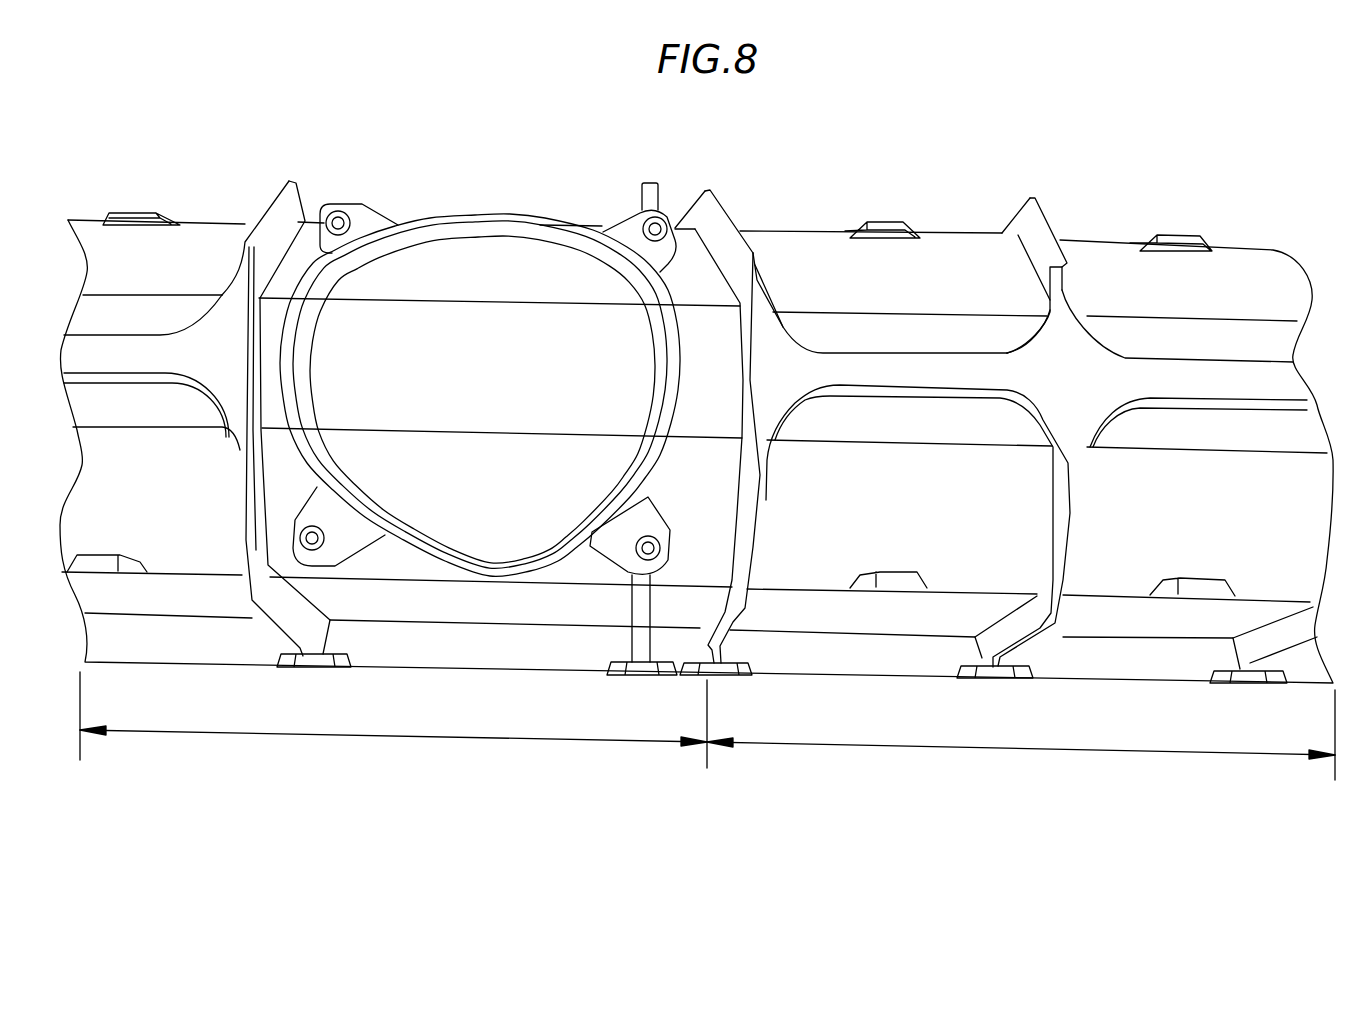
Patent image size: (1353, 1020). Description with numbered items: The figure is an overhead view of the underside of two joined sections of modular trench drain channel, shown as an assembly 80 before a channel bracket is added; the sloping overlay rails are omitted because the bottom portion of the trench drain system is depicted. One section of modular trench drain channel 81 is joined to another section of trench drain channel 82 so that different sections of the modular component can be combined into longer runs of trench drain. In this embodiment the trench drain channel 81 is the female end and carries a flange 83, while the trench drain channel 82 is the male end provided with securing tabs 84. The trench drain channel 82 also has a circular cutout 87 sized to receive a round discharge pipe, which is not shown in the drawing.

The beam assembly 80 is at (758, 150).
The trench drain channel 81 is at (1007, 748).
The trench drain channel 82 is at (400, 740).
The flange 83 is at (714, 193).
The securing tabs 84 is at (648, 182).
The circular cutout 87 is at (468, 357).